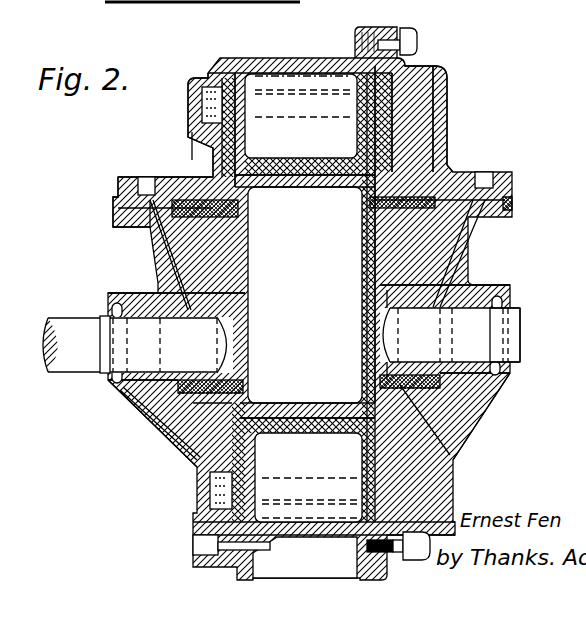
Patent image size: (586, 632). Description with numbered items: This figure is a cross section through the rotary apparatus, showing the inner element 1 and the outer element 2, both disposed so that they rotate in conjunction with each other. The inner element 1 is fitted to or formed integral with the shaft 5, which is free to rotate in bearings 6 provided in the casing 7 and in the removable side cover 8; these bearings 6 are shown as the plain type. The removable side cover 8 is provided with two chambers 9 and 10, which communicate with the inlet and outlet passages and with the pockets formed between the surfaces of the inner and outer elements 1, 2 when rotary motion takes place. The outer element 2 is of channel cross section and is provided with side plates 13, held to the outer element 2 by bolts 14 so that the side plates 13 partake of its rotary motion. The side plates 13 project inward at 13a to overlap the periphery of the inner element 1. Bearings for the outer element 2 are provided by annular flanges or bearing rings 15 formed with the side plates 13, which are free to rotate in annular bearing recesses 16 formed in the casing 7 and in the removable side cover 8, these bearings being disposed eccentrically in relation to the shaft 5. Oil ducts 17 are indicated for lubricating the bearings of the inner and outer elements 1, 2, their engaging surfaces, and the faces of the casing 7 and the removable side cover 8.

The inner element 1 is at (249, 268).
The outer element 2 is at (247, 141).
The shaft 5 is at (281, 340).
The bearings 6 is at (132, 297).
The casing 7 is at (152, 246).
The removable side cover 8 is at (395, 28).
The chamber 9 is at (430, 107).
The chamber 10 is at (425, 123).
The side plates 13 is at (192, 152).
The inward projection of side plate 13a is at (357, 188).
The bolts 14 is at (313, 117).
The annular flanges or bearing rings 15 is at (177, 445).
The annular bearing recesses 16 is at (150, 425).
The oil ducts 17 is at (368, 211).